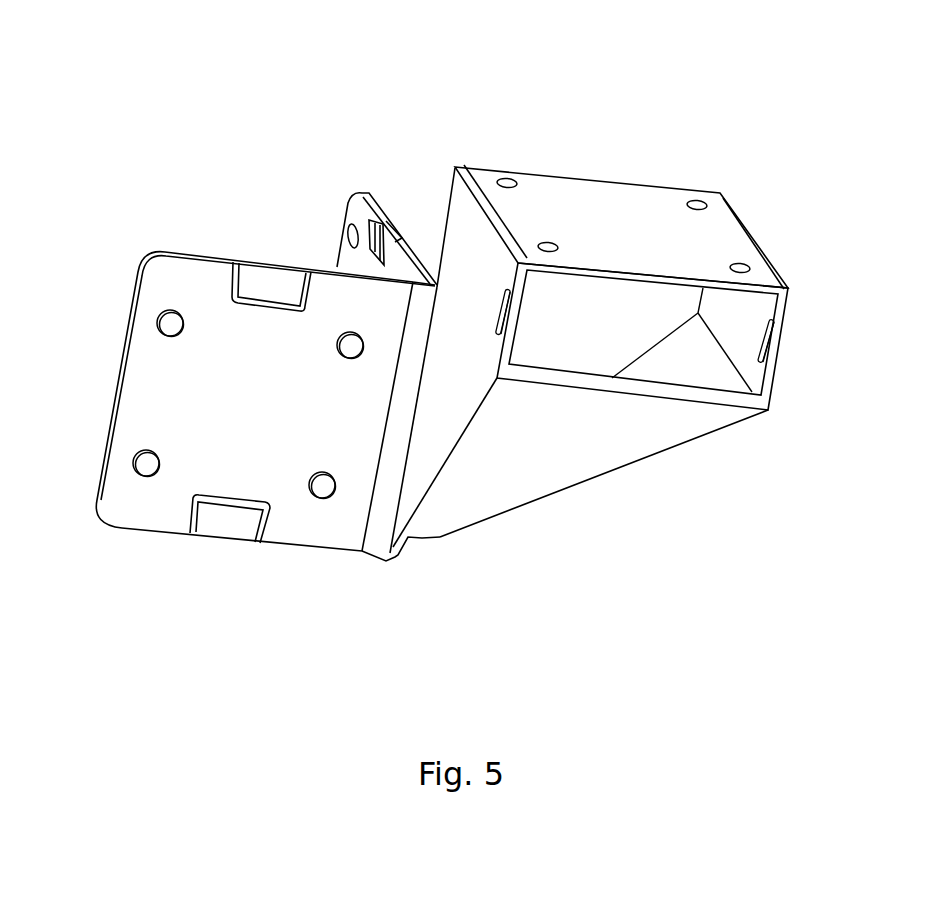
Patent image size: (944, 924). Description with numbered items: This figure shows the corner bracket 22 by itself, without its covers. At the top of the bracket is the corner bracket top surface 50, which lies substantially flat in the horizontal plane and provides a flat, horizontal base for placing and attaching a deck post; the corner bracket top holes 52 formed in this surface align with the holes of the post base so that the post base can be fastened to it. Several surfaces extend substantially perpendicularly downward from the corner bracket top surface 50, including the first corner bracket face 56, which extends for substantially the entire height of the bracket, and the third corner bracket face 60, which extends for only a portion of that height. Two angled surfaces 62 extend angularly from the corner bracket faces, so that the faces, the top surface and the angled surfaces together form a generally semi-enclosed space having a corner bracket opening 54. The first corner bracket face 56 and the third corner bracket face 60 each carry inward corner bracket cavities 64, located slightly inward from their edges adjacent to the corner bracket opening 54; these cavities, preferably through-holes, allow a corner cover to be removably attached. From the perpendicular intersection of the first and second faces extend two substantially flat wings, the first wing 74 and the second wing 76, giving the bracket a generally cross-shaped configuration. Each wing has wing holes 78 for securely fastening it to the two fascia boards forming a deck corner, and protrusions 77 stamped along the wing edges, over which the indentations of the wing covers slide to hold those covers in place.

The corner bracket 22 is at (499, 92).
The corner bracket top surface 50 is at (594, 205).
The corner bracket top holes 52 is at (697, 200).
The corner bracket opening 54 is at (583, 332).
The first corner bracket face 56 is at (430, 445).
The third corner bracket face 60 is at (755, 381).
The angled surfaces 62 is at (507, 472).
The corner bracket cavities 64 is at (499, 313).
The first wing 74 is at (155, 395).
The second wing 76 is at (362, 193).
The protrusions 77 is at (270, 283).
The wing holes 78 is at (165, 325).